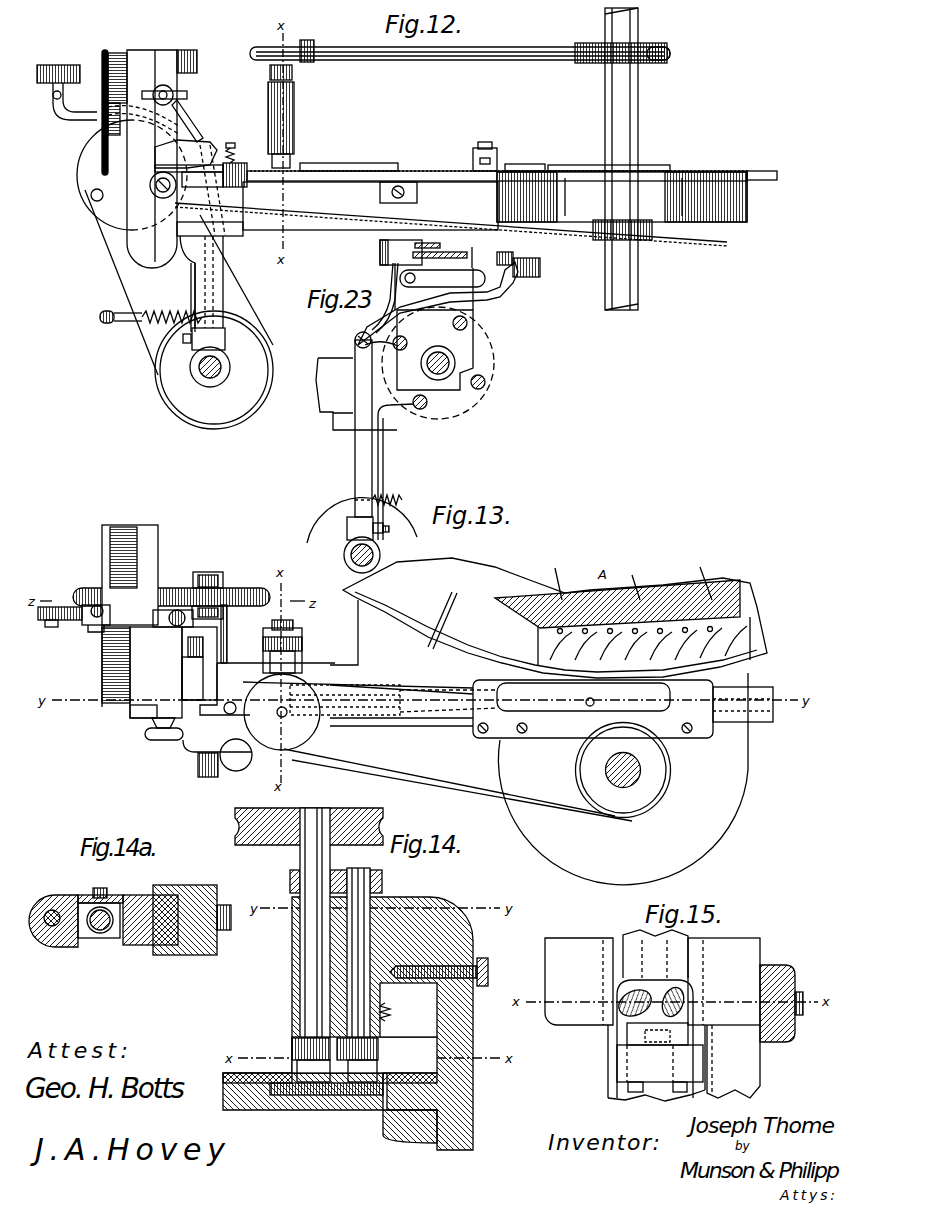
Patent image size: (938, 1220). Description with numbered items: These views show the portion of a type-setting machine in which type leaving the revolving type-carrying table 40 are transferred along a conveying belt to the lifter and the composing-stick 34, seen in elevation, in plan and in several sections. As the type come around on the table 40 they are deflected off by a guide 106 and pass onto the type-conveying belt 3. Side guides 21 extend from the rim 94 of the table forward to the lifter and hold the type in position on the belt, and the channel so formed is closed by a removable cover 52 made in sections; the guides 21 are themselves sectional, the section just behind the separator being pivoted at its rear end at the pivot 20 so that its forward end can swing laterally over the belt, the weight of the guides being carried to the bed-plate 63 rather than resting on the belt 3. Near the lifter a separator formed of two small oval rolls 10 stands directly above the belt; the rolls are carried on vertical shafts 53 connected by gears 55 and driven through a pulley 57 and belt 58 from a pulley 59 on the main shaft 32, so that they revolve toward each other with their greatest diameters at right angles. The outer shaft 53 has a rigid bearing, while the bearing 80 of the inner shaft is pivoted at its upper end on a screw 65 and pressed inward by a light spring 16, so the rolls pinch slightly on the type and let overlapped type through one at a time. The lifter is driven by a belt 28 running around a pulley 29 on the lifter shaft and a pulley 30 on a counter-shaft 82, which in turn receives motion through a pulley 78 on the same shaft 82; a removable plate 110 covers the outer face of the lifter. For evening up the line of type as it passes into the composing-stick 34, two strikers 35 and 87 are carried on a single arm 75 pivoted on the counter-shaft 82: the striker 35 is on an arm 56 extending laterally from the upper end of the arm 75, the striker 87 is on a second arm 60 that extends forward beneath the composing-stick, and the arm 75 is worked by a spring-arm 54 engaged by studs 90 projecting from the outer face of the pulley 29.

In FIG. 12, the type-conveying belt 3 is at (761, 174).
In FIG. 13, the type-conveying belt 3 is at (420, 728).
In FIG. 14, the type-conveying belt 3 is at (349, 1094).
In FIG. 15, the type-conveying belt 3 is at (612, 1069).
In FIG. 14, the oval-shaped rolls 10 is at (375, 1069).
In FIG. 15, the oval-shaped rolls 10 is at (646, 998).
In FIG. 14, the light spring 16 is at (392, 1035).
In FIG. 12, the pivot 20 is at (491, 156).
In FIG. 12, the side guides 21 is at (267, 178).
In FIG. 23, the side guides 21 is at (356, 384).
In FIG. 13, the side guides 21 is at (511, 680).
In FIG. 14, the side guides 21 is at (330, 1071).
In FIG. 15, the side guides 21 is at (652, 1103).
In FIG. 12, the belt 28 is at (108, 260).
In FIG. 13, the belt 28 is at (218, 593).
In FIG. 12, the pulley 29 is at (151, 170).
In FIG. 23, the pulley 29 is at (495, 357).
In FIG. 13, the pulley 29 is at (162, 609).
In FIG. 12, the pulley 30 is at (214, 370).
In FIG. 13, the pulley 30 is at (246, 589).
In FIG. 12, the main shaft 32 is at (622, 159).
In FIG. 13, the main shaft 32 is at (638, 764).
In FIG. 12, the composing-stick 34 is at (106, 50).
In FIG. 23, the composing-stick 34 is at (454, 251).
In FIG. 13, the composing-stick 34 is at (106, 530).
In FIG. 12, the striker 35 is at (216, 146).
In FIG. 23, the striker 35 is at (390, 348).
In FIG. 23, the revolving type-carrying table 40 is at (428, 402).
In FIG. 13, the revolving type-carrying table 40 is at (621, 621).
In FIG. 12, the removable cover 52 is at (374, 168).
In FIG. 13, the removable cover 52 is at (348, 702).
In FIG. 15, the removable cover 52 is at (660, 1052).
In FIG. 13, the vertical shafts 53 is at (277, 712).
In FIG. 14A, the vertical shafts 53 is at (118, 897).
In FIG. 14, the vertical shafts 53 is at (282, 979).
In FIG. 12, the spring-arm 54 is at (191, 288).
In FIG. 23, the spring-arm 54 is at (385, 453).
In FIG. 13, the spring-arm 54 is at (195, 633).
In FIG. 12, the gears 55 is at (292, 72).
In FIG. 14, the gears 55 is at (290, 880).
In FIG. 13, the arm 56 is at (213, 667).
In FIG. 12, the pulley 57 is at (667, 53).
In FIG. 13, the pulley 57 is at (631, 790).
In FIG. 12, the belt 58 is at (308, 43).
In FIG. 13, the belt 58 is at (282, 712).
In FIG. 14, the belt 58 is at (309, 819).
In FIG. 12, the pulley 59 is at (516, 54).
In FIG. 13, the pulley 59 is at (468, 778).
In FIG. 12, the second arm 60 is at (196, 125).
In FIG. 23, the second arm 60 is at (436, 305).
In FIG. 13, the second arm 60 is at (84, 626).
In FIG. 13, the bed-plate 63 is at (358, 677).
In FIG. 14A, the screw 65 is at (93, 892).
In FIG. 14, the screw 65 is at (358, 905).
In FIG. 12, the arm 75 is at (215, 293).
In FIG. 23, the arm 75 is at (360, 446).
In FIG. 13, the arm 75 is at (212, 623).
In FIG. 23, the pulley 78 is at (330, 522).
In FIG. 14A, the bearing 80 is at (110, 940).
In FIG. 14, the bearing 80 is at (375, 917).
In FIG. 12, the counter-shaft 82 is at (205, 380).
In FIG. 23, the counter-shaft 82 is at (351, 548).
In FIG. 13, the counter-shaft 82 is at (203, 769).
In FIG. 12, the striker 87 is at (73, 68).
In FIG. 23, the striker 87 is at (530, 263).
In FIG. 13, the striker 87 is at (49, 606).
In FIG. 12, the studs 90 is at (92, 199).
In FIG. 23, the studs 90 is at (406, 340).
In FIG. 13, the studs 90 is at (172, 621).
In FIG. 13, the rim 94 is at (548, 618).
In FIG. 13, the guide 106 is at (597, 671).
In FIG. 12, the removable plate 110 is at (162, 159).
In FIG. 13, the removable plate 110 is at (172, 683).